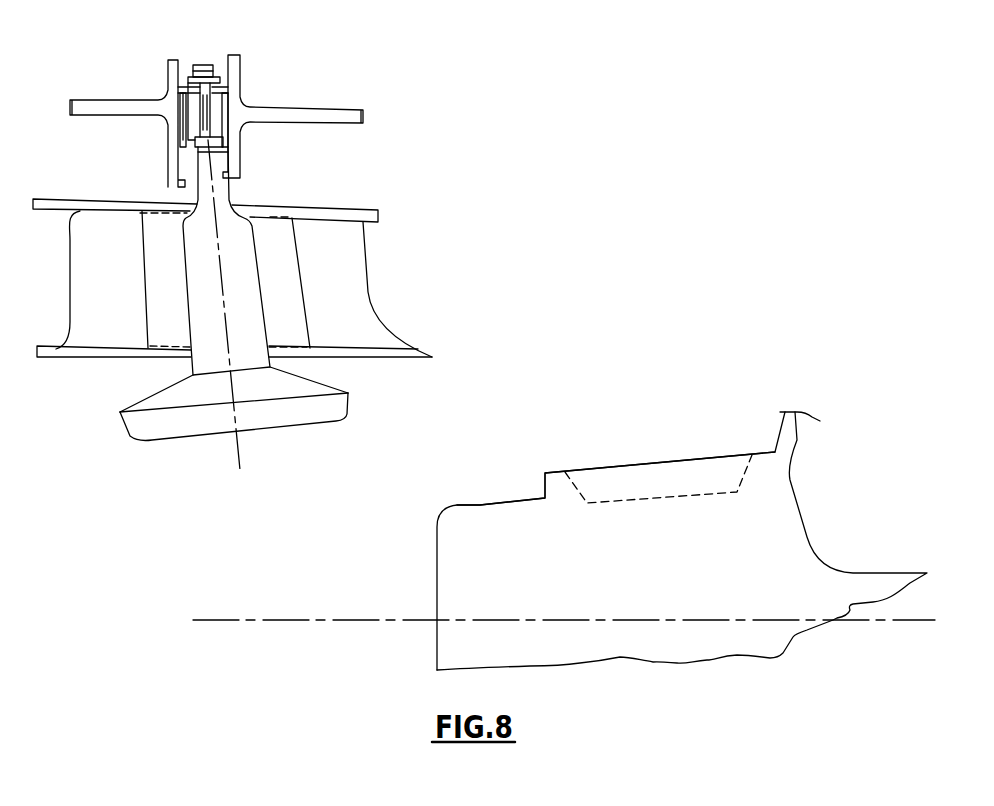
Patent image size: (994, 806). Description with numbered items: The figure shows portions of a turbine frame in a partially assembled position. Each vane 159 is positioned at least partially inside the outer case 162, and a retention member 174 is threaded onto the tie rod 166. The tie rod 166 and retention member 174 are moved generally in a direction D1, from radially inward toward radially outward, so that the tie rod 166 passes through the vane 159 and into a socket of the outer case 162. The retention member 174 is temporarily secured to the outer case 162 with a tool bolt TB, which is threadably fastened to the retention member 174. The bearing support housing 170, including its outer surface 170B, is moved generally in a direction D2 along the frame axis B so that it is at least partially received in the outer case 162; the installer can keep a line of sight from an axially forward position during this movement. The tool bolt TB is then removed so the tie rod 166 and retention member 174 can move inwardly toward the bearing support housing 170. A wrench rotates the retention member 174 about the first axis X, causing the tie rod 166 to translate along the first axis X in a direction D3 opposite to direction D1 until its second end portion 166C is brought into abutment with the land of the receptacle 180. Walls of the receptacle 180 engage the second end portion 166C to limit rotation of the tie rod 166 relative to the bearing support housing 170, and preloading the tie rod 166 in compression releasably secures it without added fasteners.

The outer case 162 is at (115, 100).
The tool bolt TB is at (210, 65).
The retention member 174 is at (237, 173).
The vane 159 is at (90, 202).
The tie rod 166 is at (257, 232).
The second end portion 166C is at (333, 388).
The first axis X is at (240, 453).
The direction D1 is at (472, 188).
The direction D2 is at (157, 580).
The direction D3 is at (472, 325).
The frame axis B is at (913, 620).
The bearing support housing 170 is at (437, 560).
The hub outer surface 170B is at (480, 505).
The receptacle 180 is at (683, 460).